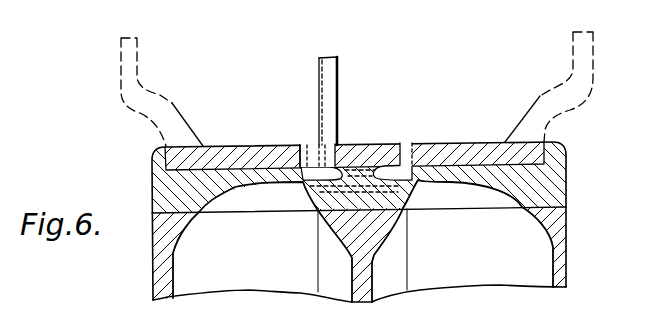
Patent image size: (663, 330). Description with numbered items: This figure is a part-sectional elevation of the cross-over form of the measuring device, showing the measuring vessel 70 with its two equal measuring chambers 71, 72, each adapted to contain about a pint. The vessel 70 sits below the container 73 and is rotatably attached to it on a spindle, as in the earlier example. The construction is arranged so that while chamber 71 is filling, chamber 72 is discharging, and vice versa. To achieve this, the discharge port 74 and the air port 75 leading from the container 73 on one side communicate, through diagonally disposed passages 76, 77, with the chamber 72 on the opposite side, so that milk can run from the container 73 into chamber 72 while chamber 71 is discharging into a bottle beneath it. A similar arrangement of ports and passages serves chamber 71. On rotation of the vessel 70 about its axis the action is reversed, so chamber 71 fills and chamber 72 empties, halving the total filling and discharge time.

The measuring vessel 70 is at (163, 257).
The measuring chamber 71 is at (262, 242).
The measuring chamber 72 is at (462, 241).
The container 73 is at (123, 94).
The discharge port 74 is at (308, 156).
The air port 75 is at (318, 190).
The diagonally disposed passage 76 is at (321, 72).
The diagonally disposed passage 77 is at (372, 10).